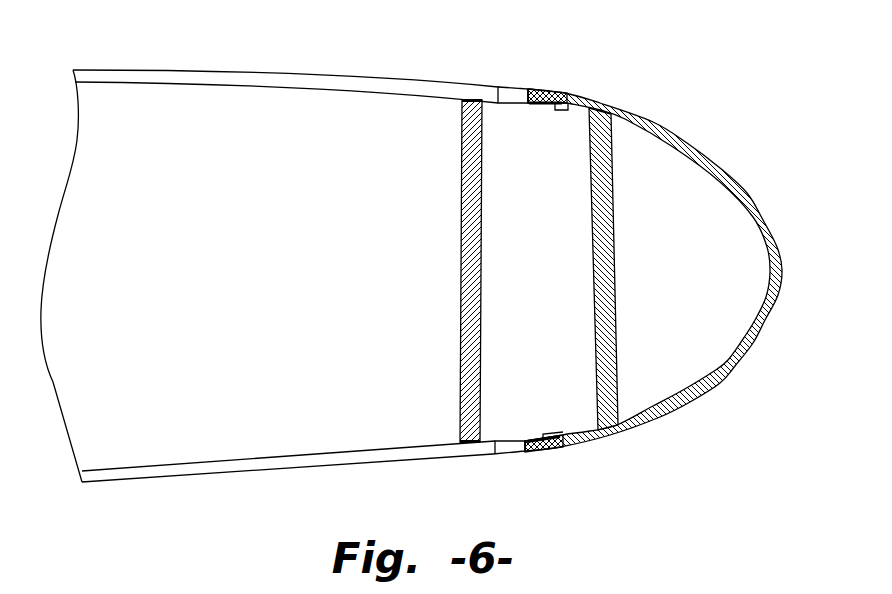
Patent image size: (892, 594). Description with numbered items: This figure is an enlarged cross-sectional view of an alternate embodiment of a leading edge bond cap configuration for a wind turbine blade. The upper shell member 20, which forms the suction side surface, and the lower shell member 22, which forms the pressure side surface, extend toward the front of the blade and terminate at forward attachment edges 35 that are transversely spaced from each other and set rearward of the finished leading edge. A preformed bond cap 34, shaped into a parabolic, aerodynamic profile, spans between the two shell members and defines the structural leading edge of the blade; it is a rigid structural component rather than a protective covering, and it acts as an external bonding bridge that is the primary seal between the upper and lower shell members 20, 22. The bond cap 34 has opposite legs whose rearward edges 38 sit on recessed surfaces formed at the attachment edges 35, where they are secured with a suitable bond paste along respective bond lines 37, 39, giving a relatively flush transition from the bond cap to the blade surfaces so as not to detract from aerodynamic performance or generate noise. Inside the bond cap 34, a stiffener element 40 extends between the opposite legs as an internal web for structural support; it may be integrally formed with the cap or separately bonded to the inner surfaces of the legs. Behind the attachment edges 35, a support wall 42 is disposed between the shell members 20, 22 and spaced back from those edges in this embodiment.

The upper shell member 20 is at (287, 71).
The lower shell member 22 is at (290, 469).
The bond cap 34 is at (760, 201).
The attachment edges 35 is at (557, 110).
The bond line 37 is at (528, 86).
The rearward edges 38 is at (543, 90).
The bond line 39 is at (528, 454).
The stiffener element 40 is at (612, 277).
The support wall 42 is at (482, 262).